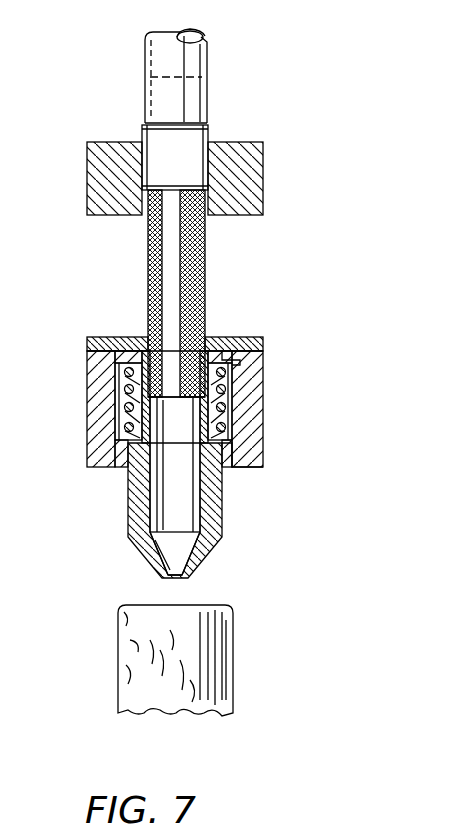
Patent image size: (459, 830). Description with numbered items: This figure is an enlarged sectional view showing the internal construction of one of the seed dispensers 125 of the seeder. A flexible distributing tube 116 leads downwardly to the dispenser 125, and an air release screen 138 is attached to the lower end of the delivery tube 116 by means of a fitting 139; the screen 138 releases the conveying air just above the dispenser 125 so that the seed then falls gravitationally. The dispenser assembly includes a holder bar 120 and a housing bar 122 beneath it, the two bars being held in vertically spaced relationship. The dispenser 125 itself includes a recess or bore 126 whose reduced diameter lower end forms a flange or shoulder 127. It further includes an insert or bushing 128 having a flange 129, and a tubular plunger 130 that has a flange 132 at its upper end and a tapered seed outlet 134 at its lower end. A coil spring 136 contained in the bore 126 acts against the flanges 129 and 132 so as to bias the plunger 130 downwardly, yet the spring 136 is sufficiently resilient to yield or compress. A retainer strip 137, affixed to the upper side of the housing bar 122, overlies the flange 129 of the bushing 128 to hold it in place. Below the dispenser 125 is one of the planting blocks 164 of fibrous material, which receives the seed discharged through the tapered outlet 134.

The flexible distributing tube 116 is at (207, 58).
The fitting 139 is at (209, 133).
The holder bar 120 is at (103, 142).
The air release screen 138 is at (205, 245).
The retainer strip 137 is at (118, 337).
The dispenser 125 is at (214, 330).
The flange 129 is at (233, 357).
The housing bar 122 is at (264, 417).
The recess or bore 126 is at (118, 408).
The coil spring 136 is at (124, 388).
The insert or bushing 128 is at (150, 471).
The flange 132 is at (118, 442).
The tubular plunger 130 is at (222, 528).
The flange or shoulder 127 is at (228, 470).
The tapered seed outlet 134 is at (153, 560).
The planting block 164 is at (233, 648).